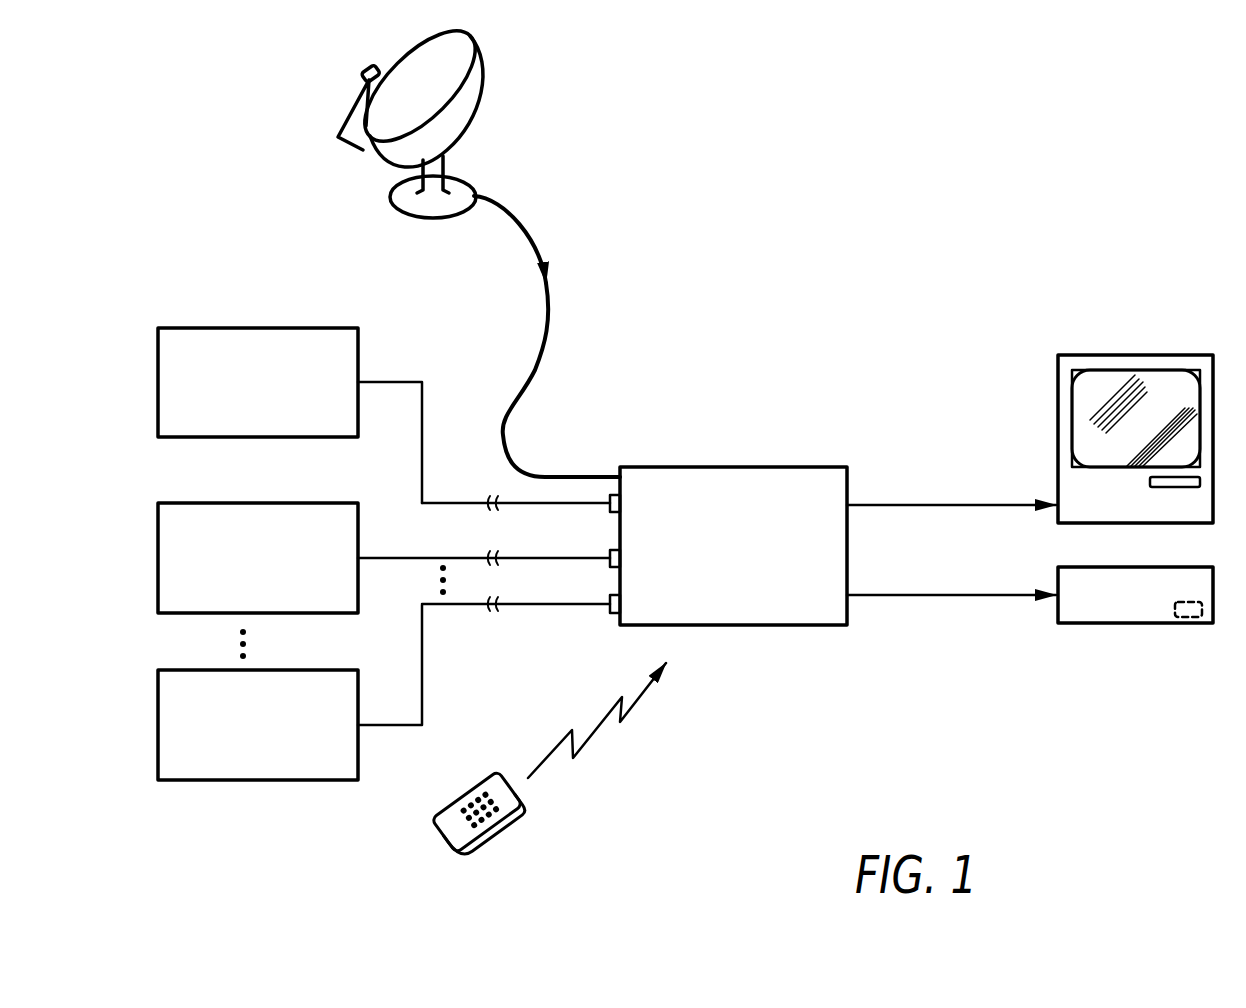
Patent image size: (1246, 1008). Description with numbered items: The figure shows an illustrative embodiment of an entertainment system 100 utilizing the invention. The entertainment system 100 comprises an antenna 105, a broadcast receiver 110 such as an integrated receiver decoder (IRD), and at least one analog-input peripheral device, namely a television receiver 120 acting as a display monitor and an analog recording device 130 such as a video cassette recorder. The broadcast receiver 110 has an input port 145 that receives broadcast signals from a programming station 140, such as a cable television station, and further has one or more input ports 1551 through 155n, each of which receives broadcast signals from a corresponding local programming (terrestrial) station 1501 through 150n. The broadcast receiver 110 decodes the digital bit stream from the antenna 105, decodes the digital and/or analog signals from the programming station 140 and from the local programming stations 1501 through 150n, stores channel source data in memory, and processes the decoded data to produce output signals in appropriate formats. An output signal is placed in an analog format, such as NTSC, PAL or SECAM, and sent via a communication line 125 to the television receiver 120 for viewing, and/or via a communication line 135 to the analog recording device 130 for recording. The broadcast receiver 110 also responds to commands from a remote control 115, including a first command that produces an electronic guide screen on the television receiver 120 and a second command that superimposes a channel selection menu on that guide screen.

The entertainment system 100 is at (1005, 196).
The antenna 105 is at (499, 66).
The broadcast receiver 110 is at (762, 467).
The remote control 115 is at (511, 820).
The television receiver 120 is at (1135, 355).
The communication line 125 is at (930, 505).
The analog recording device 130 is at (1150, 567).
The communication line 135 is at (928, 595).
The programming station 140 is at (296, 328).
The input port 145 is at (608, 517).
The local programming station 1501 is at (296, 503).
The local programming station 150n is at (296, 670).
The input port 1551 is at (608, 572).
The input port 155n is at (610, 617).